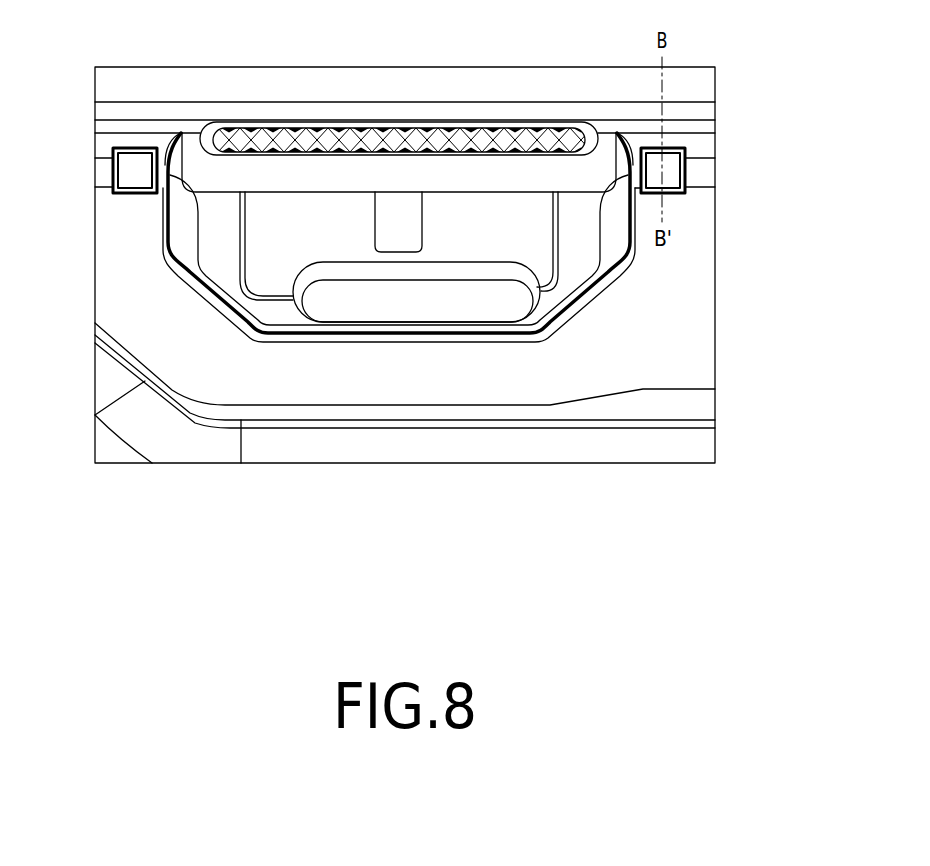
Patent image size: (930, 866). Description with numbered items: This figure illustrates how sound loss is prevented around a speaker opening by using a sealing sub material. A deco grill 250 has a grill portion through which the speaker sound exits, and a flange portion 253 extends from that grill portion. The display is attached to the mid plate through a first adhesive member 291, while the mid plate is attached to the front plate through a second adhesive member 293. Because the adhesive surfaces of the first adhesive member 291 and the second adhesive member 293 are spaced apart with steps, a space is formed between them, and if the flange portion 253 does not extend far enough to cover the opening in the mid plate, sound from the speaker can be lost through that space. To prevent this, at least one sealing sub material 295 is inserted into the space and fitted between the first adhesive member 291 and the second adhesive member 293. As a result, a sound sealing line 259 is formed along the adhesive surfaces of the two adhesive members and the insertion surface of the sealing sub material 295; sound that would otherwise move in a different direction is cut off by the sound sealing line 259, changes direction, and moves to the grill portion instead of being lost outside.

The deco grill 250 is at (585, 128).
The flange portion 253 is at (196, 157).
The sound sealing line 259 is at (398, 335).
The first adhesive member 291 is at (148, 353).
The second adhesive member 293 is at (103, 142).
The sealing sub material 295 is at (113, 168).